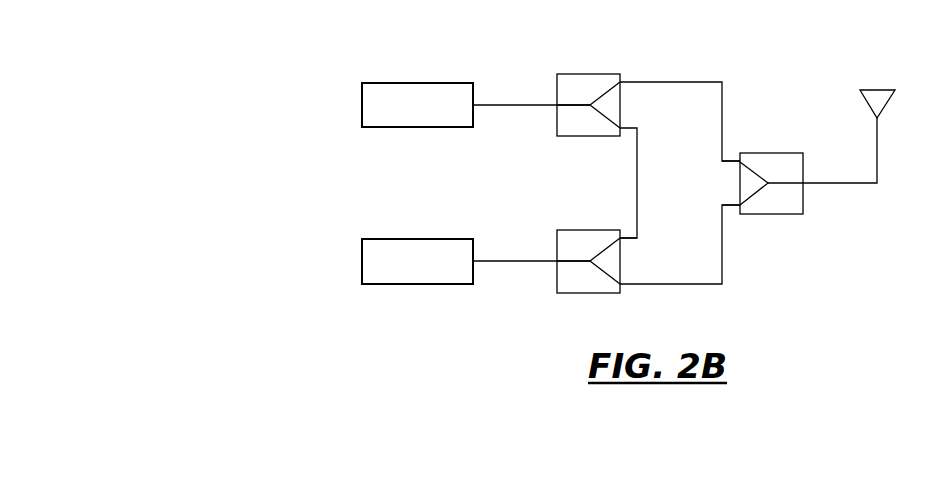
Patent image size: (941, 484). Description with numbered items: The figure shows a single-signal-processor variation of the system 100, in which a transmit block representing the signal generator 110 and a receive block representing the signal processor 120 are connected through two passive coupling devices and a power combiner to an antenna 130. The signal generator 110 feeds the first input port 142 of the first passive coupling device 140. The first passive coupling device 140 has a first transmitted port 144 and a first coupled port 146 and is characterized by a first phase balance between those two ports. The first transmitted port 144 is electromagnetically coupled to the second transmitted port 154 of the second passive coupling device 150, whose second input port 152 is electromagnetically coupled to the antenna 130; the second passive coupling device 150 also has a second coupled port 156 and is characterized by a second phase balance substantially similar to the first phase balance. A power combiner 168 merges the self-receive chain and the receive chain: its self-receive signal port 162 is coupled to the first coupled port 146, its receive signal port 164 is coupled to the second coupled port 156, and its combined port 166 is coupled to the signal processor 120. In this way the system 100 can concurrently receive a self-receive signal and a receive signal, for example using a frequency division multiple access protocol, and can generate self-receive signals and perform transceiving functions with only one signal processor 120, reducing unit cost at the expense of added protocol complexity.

The system 100 is at (287, 278).
The signal generator 110 is at (390, 127).
The signal processor 120 is at (392, 239).
The antenna 130 is at (872, 90).
The first passive coupling device 140 is at (585, 74).
The first input port 142 is at (557, 105).
The first transmitted port 144 is at (622, 83).
The first coupled port 146 is at (622, 128).
The second passive coupling device 150 is at (778, 153).
The second input port 152 is at (805, 183).
The second transmitted port 154 is at (740, 162).
The second coupled port 156 is at (740, 205).
The self-receive signal port 162 is at (622, 239).
The receive signal port 164 is at (622, 285).
The combined port 166 is at (557, 262).
The power combiner 168 is at (577, 230).